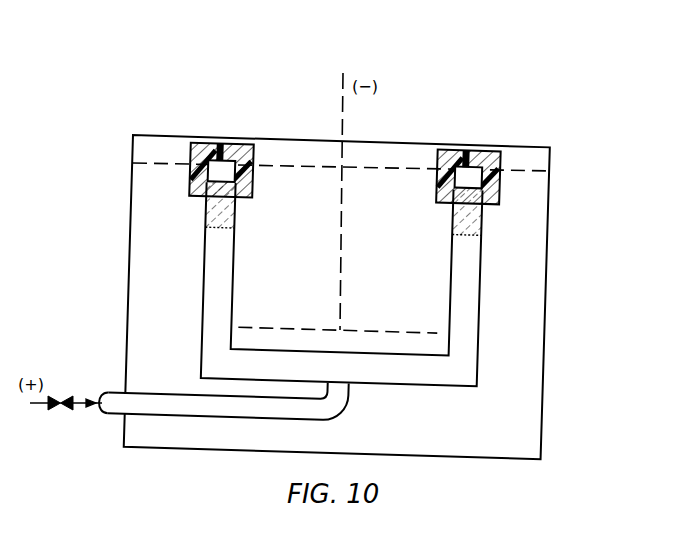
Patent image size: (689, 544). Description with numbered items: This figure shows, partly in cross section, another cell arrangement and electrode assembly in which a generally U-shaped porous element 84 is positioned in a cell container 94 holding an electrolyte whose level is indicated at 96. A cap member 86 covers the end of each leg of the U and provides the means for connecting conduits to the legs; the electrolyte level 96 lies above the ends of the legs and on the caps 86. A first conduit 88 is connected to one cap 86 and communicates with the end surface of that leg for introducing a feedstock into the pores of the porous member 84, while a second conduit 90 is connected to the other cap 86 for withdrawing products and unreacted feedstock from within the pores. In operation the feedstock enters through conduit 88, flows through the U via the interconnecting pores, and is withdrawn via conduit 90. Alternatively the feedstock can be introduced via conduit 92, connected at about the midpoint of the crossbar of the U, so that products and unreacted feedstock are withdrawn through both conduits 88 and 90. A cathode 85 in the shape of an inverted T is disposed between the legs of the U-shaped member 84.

The porous element 84 is at (481, 265).
The cathode 85 is at (341, 261).
The cap member 86 is at (198, 142).
The first conduit 88 is at (220, 143).
The second conduit 90 is at (466, 150).
The conduit 92 is at (45, 404).
The cell container 94 is at (551, 268).
The electrolyte level 96 is at (161, 163).